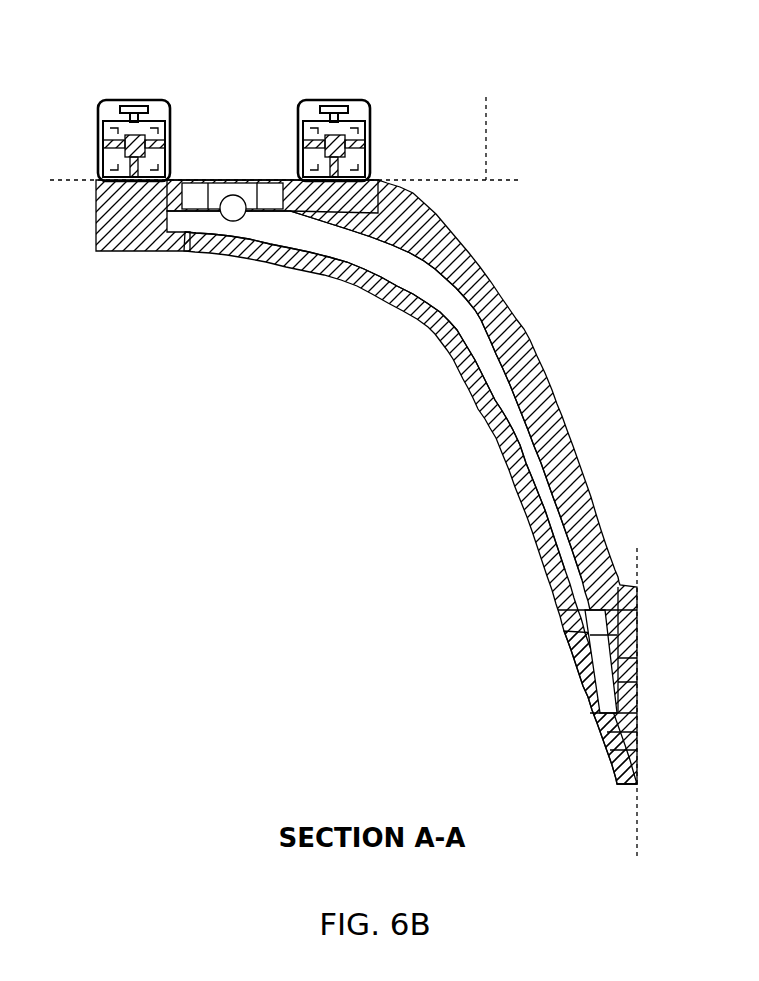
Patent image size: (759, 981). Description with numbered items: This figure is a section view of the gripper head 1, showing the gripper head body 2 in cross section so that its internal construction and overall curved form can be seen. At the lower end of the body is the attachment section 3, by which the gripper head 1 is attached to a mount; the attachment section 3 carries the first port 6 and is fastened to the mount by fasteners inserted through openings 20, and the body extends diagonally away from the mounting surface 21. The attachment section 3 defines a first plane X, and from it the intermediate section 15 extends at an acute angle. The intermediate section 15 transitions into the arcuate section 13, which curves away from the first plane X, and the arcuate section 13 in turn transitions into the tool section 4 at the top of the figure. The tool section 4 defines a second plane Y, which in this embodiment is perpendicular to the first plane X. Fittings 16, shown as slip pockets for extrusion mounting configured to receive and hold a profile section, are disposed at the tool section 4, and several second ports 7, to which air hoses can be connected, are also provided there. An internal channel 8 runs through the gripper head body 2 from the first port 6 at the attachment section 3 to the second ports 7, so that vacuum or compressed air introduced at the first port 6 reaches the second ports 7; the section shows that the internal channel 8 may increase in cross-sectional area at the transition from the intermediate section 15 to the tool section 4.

The gripper head 1 is at (374, 450).
The gripper head body 2 is at (453, 373).
The attachment section 3 is at (641, 734).
The tool section 4 is at (180, 158).
The first port 6 is at (638, 678).
The second port 7 is at (270, 180).
The internal channel 8 is at (448, 303).
The arcuate section 13 is at (393, 307).
The intermediate section 15 is at (565, 422).
The fitting 16 is at (98, 153).
The openings 20 is at (583, 703).
The mounting surface 21 is at (637, 618).
The first plane X is at (486, 97).
The second plane Y is at (632, 827).